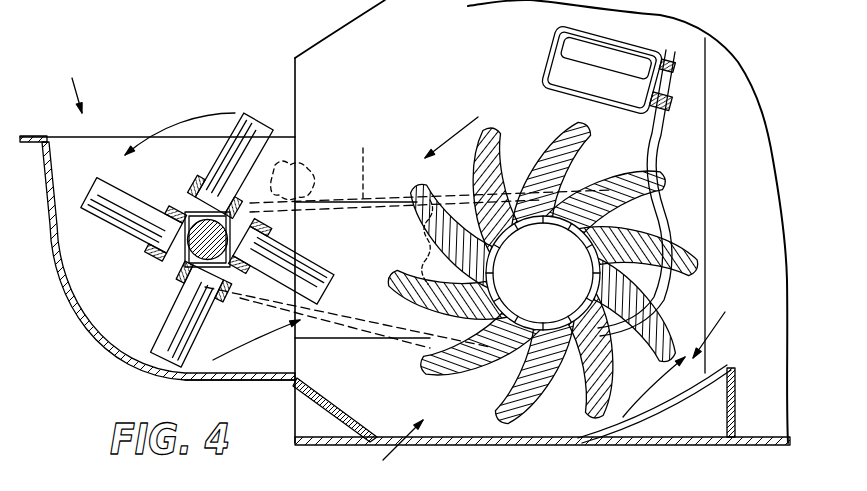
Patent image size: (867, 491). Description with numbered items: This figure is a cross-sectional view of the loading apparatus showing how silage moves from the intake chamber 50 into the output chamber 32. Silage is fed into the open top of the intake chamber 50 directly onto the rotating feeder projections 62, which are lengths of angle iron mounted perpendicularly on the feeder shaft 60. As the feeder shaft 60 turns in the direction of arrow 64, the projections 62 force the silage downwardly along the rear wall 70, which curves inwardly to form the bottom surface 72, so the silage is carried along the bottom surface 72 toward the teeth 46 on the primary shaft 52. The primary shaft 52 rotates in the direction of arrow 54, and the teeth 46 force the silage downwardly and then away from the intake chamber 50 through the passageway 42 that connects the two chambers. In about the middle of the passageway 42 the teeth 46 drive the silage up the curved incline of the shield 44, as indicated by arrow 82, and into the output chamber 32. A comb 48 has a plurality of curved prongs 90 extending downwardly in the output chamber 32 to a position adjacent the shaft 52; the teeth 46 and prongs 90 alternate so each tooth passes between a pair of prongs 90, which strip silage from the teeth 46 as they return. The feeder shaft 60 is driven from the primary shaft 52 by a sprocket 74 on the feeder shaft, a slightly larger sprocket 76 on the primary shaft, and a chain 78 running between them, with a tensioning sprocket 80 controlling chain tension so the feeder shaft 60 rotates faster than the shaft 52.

The output chamber 32 is at (776, 260).
The passageway 42 is at (523, 383).
The shield 44 is at (697, 385).
The teeth 46 is at (447, 373).
The comb 48 is at (684, 80).
The intake chamber 50 is at (66, 83).
The primary shaft 52 is at (557, 266).
The arrow 54 is at (478, 117).
The feeder shaft 60 is at (208, 227).
The feeder projections 62 is at (243, 110).
The arrow 64 is at (178, 118).
The rear wall 70 is at (45, 237).
The bottom surface 72 is at (230, 383).
The sprocket 74 is at (297, 230).
The sprocket 76 is at (437, 250).
The chain 78 is at (366, 152).
The tensioning sprocket 80 is at (319, 167).
The arrow 82 is at (648, 392).
The prongs 90 is at (667, 212).